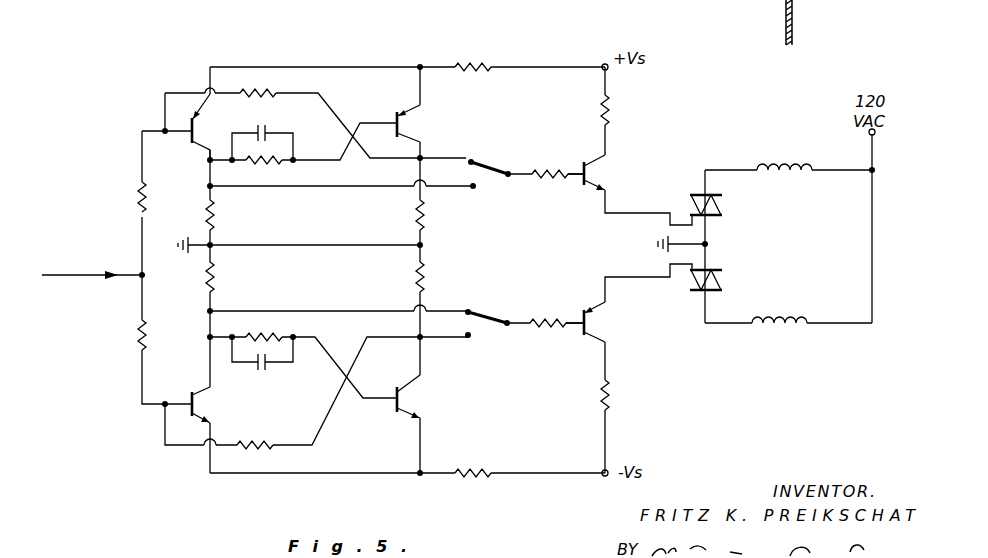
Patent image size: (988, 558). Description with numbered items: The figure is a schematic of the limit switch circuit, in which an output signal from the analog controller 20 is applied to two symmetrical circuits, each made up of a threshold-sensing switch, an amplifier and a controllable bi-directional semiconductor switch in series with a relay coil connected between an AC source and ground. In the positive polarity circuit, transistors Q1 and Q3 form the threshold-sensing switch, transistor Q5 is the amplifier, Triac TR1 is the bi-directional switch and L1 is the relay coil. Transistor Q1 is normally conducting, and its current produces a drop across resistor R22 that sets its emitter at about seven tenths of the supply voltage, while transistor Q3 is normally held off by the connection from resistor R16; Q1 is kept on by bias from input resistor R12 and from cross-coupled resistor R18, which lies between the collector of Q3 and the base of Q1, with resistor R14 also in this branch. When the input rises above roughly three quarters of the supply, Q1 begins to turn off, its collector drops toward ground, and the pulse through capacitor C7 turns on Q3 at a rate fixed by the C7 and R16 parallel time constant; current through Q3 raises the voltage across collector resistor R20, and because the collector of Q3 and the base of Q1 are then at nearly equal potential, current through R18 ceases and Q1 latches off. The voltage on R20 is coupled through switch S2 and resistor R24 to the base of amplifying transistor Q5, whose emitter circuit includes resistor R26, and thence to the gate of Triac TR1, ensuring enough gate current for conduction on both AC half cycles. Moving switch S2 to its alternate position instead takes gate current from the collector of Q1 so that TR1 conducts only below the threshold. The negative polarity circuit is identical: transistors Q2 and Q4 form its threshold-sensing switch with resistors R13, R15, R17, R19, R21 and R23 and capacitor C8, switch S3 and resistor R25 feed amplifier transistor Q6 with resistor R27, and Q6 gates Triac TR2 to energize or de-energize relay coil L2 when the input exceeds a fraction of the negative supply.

The analog controller 20 is at (89, 279).
The input resistor R12 is at (120, 197).
The resistor R13 is at (115, 337).
The resistor R14 is at (232, 215).
The resistor R15 is at (232, 277).
The resistor R16 is at (262, 171).
The resistor R17 is at (253, 329).
The cross-coupled resistor R18 is at (258, 85).
The resistor R19 is at (255, 433).
The collector resistor R20 is at (442, 215).
The resistor R21 is at (442, 277).
The resistor R22 is at (473, 57).
The resistor R23 is at (474, 461).
The resistor R24 is at (546, 159).
The resistor R25 is at (545, 310).
The resistor R26 is at (625, 111).
The resistor R27 is at (626, 407).
The capacitor C7 is at (253, 134).
The capacitor C8 is at (262, 365).
The transistor Q1 is at (176, 133).
The transistor Q2 is at (185, 398).
The transistor Q3 is at (422, 123).
The transistor Q4 is at (420, 396).
The amplifying transistor Q5 is at (599, 172).
The transistor Q6 is at (598, 322).
The switch S2 is at (465, 167).
The switch S3 is at (487, 315).
The Triac TR1 is at (685, 207).
The Triac TR2 is at (685, 283).
The relay coil L1 is at (788, 156).
The relay coil L2 is at (788, 337).